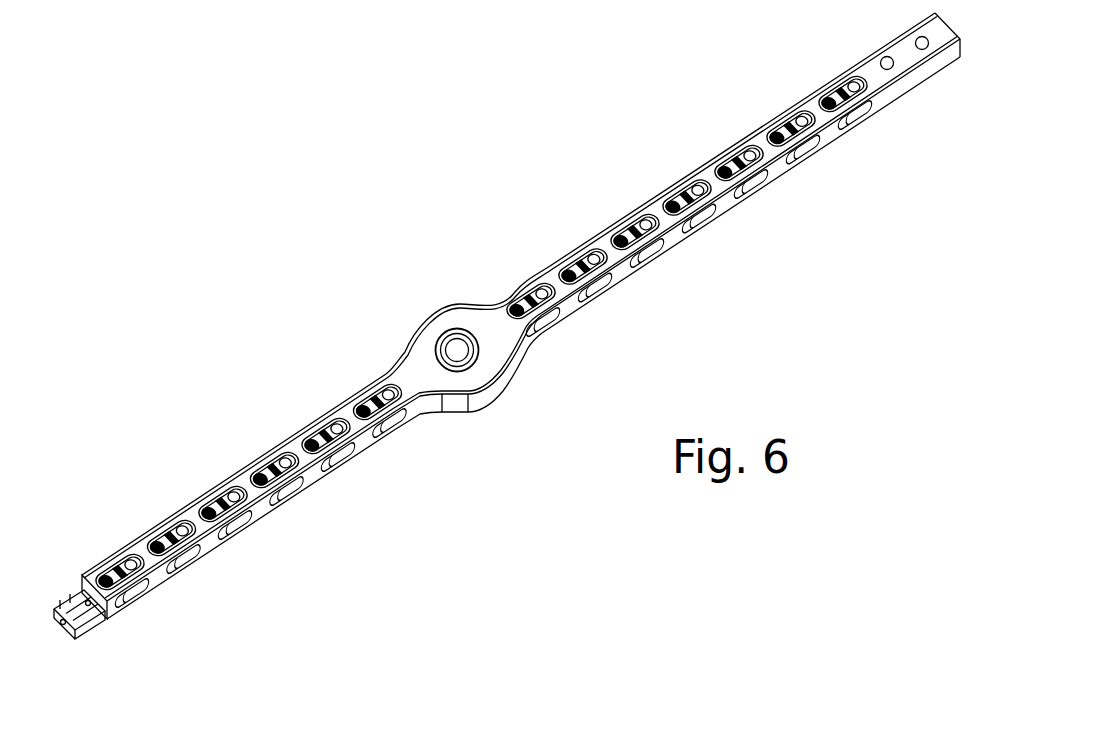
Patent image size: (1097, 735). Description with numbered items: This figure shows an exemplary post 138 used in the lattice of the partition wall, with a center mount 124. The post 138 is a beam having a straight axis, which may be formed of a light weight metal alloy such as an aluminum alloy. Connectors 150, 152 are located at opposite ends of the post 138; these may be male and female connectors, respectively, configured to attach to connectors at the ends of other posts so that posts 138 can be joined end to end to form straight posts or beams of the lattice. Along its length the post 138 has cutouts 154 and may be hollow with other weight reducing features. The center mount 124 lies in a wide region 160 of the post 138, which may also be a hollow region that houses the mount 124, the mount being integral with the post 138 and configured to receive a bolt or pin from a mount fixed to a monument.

The post 138 is at (375, 250).
The center mount 124 is at (430, 308).
The cutouts 154 is at (325, 427).
The wide region 160 is at (462, 383).
The connector 150 is at (80, 637).
The connector 152 is at (908, 94).